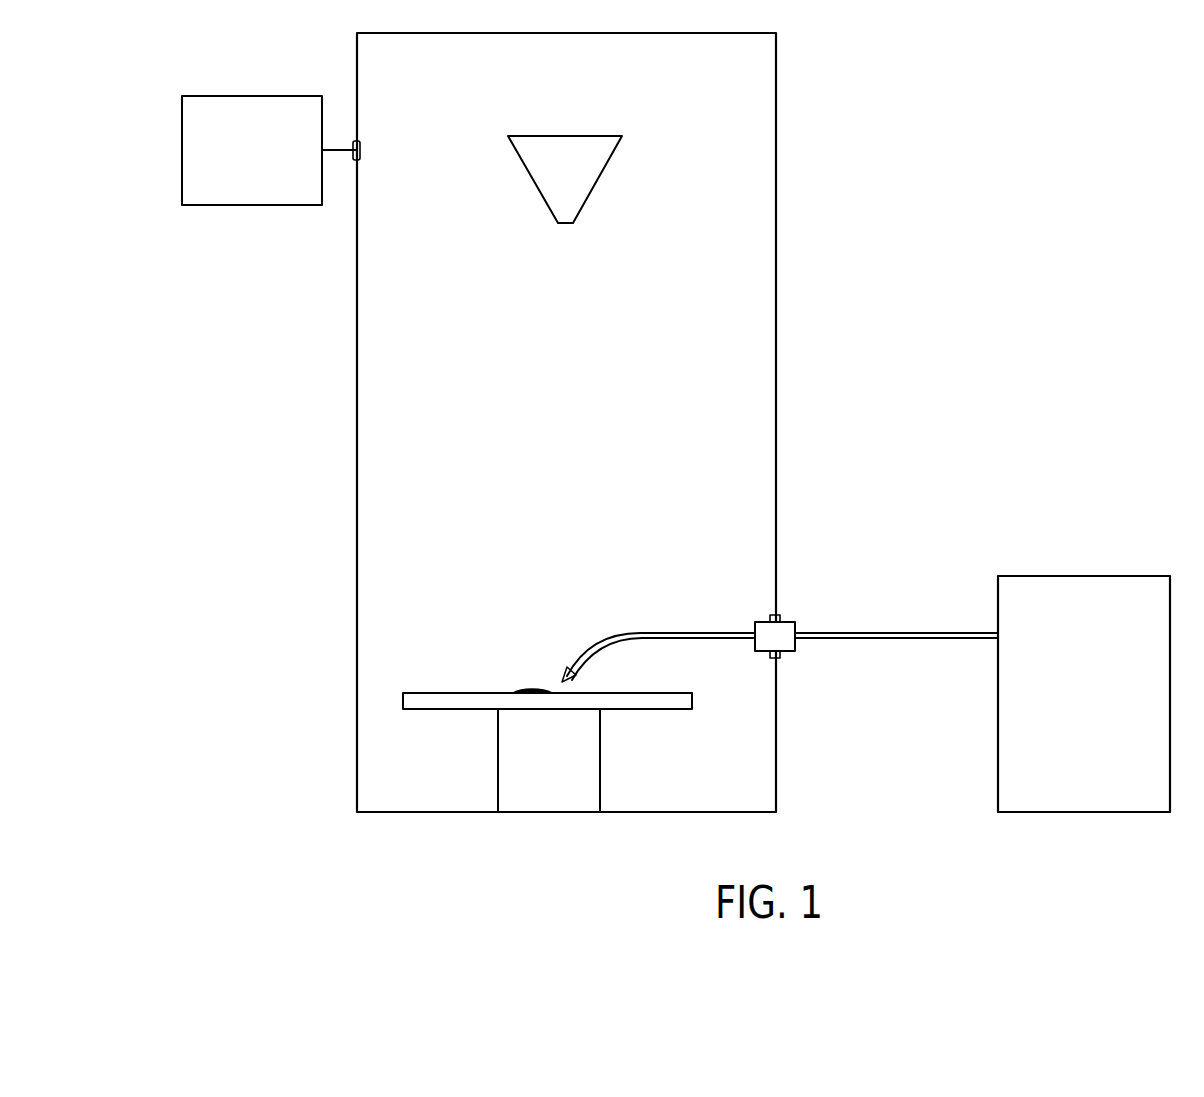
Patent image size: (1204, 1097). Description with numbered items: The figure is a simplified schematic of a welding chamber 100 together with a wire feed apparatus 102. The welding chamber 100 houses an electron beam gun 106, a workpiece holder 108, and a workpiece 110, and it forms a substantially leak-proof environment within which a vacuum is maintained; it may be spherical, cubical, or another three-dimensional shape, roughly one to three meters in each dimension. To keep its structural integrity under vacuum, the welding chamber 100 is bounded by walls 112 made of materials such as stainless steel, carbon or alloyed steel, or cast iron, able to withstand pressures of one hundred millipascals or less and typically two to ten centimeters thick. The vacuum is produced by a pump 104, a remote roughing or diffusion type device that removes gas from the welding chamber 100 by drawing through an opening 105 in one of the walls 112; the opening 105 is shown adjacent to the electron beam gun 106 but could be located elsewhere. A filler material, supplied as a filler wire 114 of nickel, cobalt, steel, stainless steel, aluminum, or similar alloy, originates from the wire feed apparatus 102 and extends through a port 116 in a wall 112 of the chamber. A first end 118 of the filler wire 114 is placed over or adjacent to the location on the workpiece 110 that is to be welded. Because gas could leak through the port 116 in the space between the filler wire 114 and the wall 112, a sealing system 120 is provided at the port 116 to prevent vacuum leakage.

The welding chamber 100 is at (776, 278).
The wire feed apparatus 102 is at (1082, 576).
The pump 104 is at (246, 96).
The opening 105 is at (362, 150).
The electron beam gun 106 is at (582, 136).
The workpiece holder 108 is at (572, 759).
The workpiece 110 is at (520, 692).
The walls 112 is at (357, 388).
The filler wire 114 is at (897, 642).
The port 116 is at (776, 618).
The first end 118 is at (560, 680).
The sealing system 120 is at (810, 623).